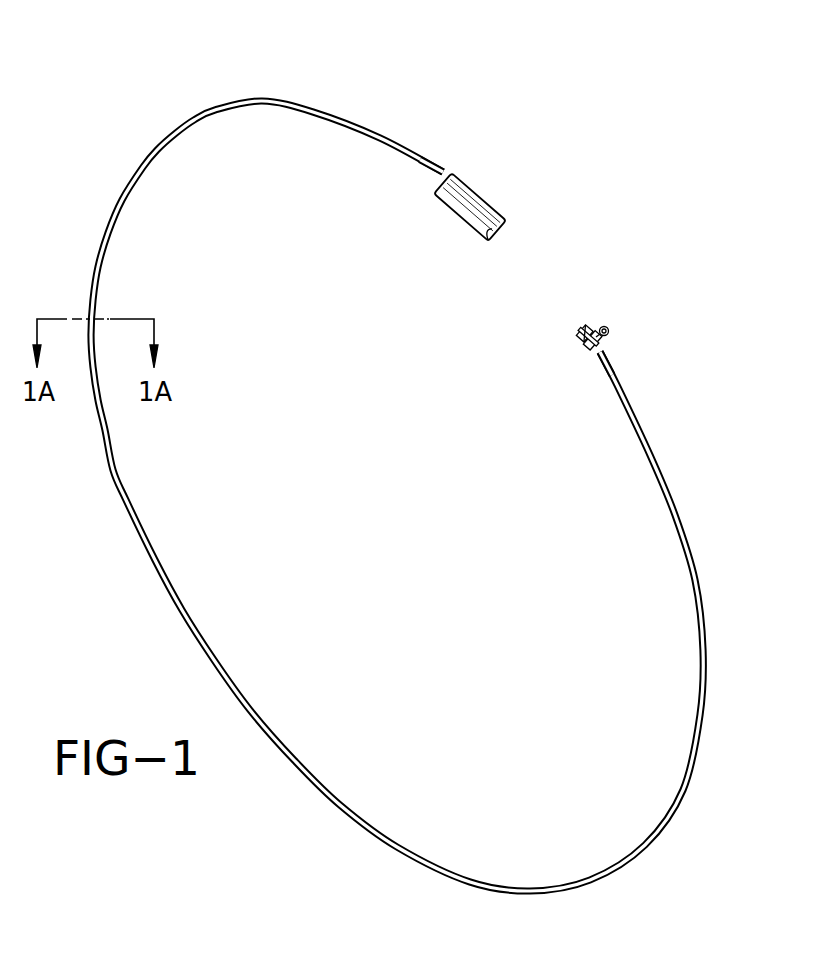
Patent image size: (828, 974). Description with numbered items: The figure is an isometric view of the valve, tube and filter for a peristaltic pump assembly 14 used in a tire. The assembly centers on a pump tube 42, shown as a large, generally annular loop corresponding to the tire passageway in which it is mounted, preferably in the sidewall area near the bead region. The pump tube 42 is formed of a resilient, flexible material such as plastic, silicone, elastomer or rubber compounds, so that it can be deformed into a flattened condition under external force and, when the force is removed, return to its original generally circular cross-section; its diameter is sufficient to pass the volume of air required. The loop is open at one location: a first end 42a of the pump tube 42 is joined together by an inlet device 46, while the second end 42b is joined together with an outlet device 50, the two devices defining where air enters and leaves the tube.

The peristaltic pump assembly 14 is at (405, 459).
The pump tube 42 is at (160, 568).
The first end 42a is at (445, 168).
The second end 42b is at (605, 350).
The inlet device 46 is at (487, 211).
The outlet device 50 is at (603, 325).